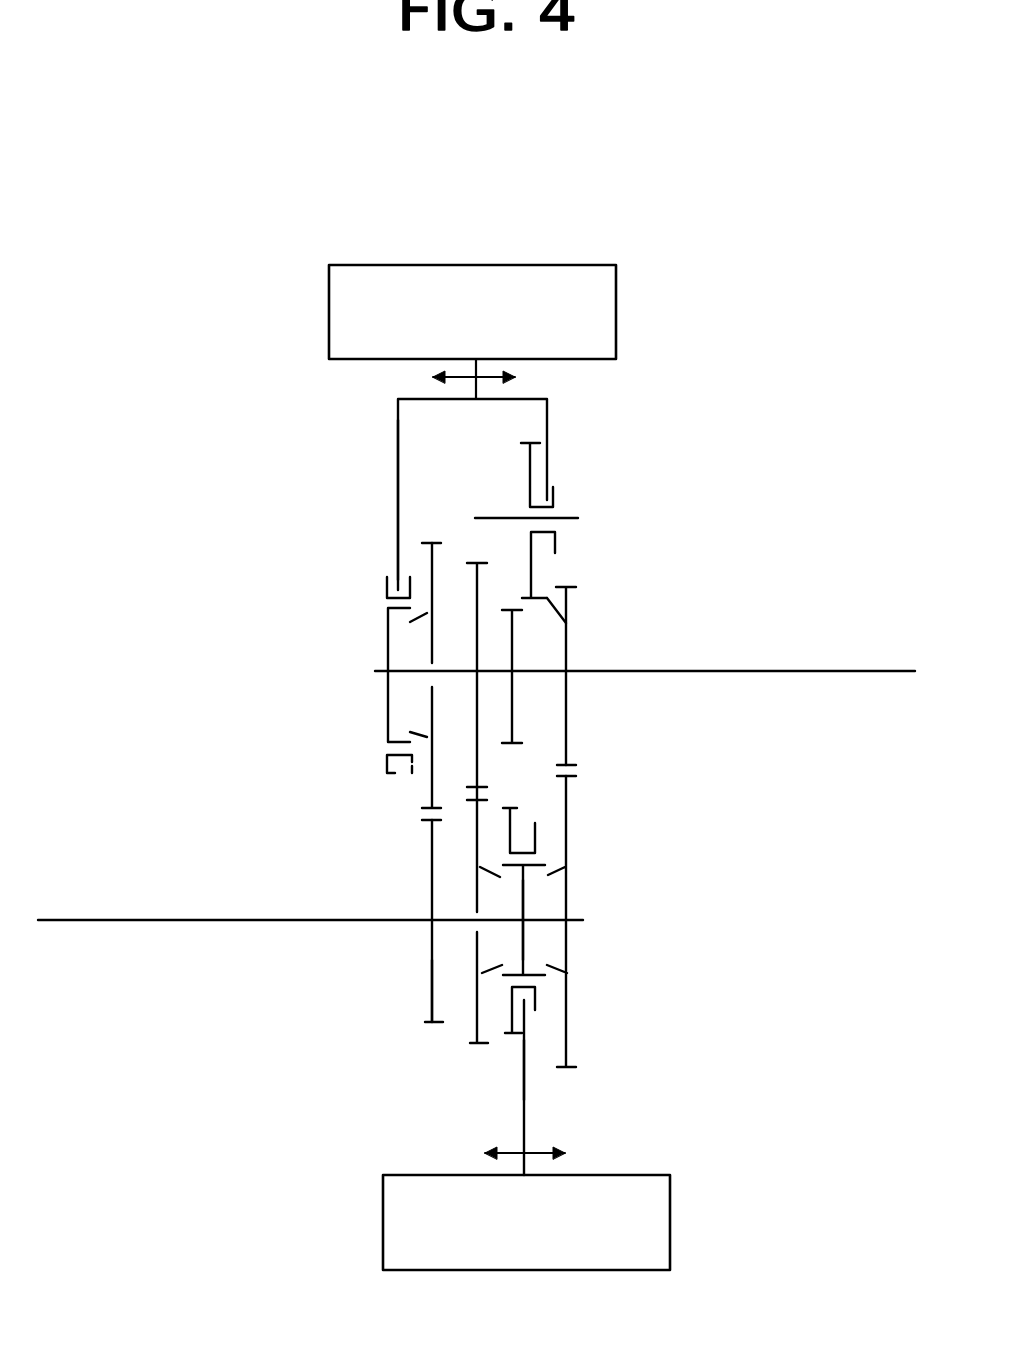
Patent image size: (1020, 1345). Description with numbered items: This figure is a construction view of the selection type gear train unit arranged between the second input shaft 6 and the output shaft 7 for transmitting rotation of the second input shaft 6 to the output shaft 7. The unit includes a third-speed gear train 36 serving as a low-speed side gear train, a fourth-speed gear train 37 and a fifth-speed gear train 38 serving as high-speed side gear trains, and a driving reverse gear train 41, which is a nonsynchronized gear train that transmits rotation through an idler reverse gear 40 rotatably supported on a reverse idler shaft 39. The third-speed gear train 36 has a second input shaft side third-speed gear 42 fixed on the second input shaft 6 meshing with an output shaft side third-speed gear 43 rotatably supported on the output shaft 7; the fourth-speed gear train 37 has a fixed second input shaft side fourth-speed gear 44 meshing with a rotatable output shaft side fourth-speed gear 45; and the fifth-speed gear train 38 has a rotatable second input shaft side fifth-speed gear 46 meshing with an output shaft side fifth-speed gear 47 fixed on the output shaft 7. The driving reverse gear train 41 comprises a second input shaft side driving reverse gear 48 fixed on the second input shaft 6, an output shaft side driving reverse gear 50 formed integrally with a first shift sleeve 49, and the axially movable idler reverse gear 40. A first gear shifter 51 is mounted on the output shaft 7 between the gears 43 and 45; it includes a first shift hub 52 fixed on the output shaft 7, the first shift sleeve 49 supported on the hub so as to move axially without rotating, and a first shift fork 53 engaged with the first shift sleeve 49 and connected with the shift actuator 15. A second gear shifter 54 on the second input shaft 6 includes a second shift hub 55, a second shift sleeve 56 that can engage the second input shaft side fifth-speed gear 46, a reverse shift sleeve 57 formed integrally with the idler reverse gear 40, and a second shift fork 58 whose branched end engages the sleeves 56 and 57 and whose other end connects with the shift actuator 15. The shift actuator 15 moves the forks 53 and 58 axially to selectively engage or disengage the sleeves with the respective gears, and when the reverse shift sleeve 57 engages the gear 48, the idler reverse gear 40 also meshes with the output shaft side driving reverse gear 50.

The second input shaft 6 is at (767, 671).
The output shaft 7 is at (175, 921).
The shift actuator 15 is at (616, 318).
The third-speed gear train 36 is at (597, 857).
The fourth-speed gear train 37 is at (457, 1037).
The fifth-speed gear train 38 is at (415, 998).
The reverse idler shaft 39 is at (507, 517).
The idler reverse gear 40 is at (566, 625).
The driving reverse gear train 41 is at (577, 445).
The second input shaft side third-speed gear 42 is at (566, 710).
The output shaft side third-speed gear 43 is at (566, 947).
The second input shaft side fourth-speed gear 44 is at (477, 747).
The output shaft side fourth-speed gear 45 is at (477, 848).
The second input shaft side fifth-speed gear 46 is at (430, 697).
The output shaft side fifth-speed gear 47 is at (432, 962).
The second input shaft side driving reverse gear 48 is at (512, 727).
The first shift sleeve 49 is at (537, 1002).
The output shaft side driving reverse gear 50 is at (512, 808).
The first gear shifter 51 is at (540, 1048).
The first shift hub 52 is at (522, 903).
The first shift fork 53 is at (525, 1127).
The second gear shifter 54 is at (357, 432).
The second shift hub 55 is at (388, 655).
The second shift sleeve 56 is at (387, 588).
The reverse shift sleeve 57 is at (553, 500).
The second shift fork 58 is at (397, 505).